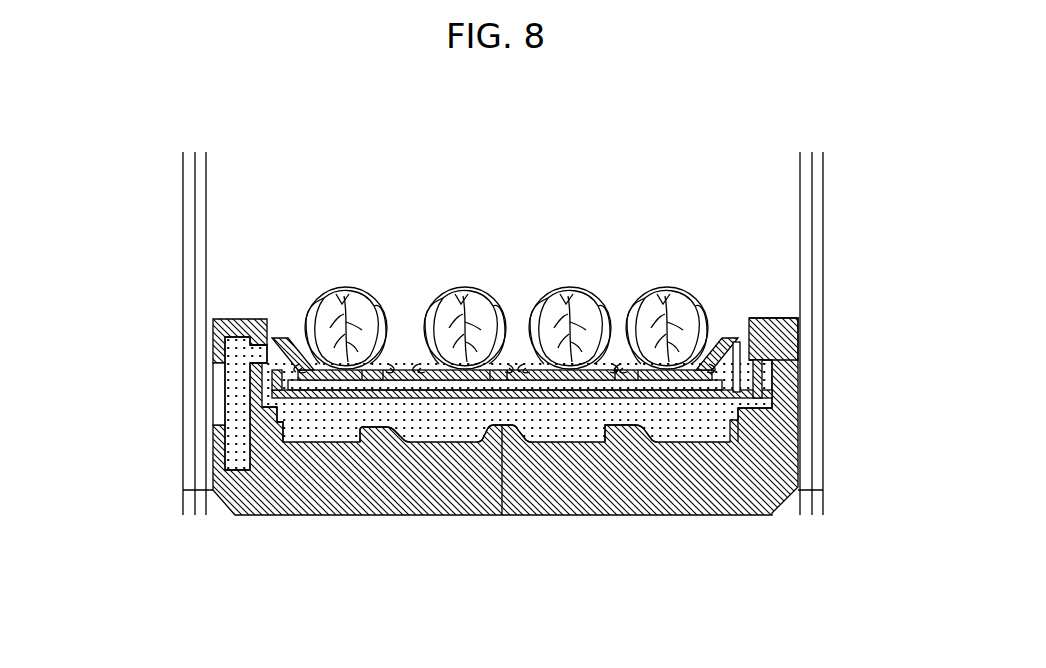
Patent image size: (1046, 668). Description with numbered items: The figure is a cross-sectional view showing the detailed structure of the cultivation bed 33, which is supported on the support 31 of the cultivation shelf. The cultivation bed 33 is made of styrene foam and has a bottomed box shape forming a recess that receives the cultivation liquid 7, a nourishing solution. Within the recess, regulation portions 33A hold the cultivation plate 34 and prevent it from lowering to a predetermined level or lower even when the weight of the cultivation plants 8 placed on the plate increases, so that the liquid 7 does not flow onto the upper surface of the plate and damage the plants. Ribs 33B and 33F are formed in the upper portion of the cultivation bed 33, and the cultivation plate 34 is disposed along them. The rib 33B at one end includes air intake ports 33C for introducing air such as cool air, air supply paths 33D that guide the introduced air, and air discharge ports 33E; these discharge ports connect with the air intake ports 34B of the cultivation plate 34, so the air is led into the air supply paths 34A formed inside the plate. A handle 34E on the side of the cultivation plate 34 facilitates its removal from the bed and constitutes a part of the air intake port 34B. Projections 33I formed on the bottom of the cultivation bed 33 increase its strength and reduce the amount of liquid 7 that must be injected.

The cultivation liquid 7 is at (580, 420).
The cultivation plants 8 is at (570, 310).
The support 31 is at (183, 182).
The cultivation bed 33 is at (262, 502).
The regulation portions 33A is at (272, 413).
The rib 33B is at (213, 326).
The air intake ports 33C is at (218, 402).
The air supply paths 33D is at (237, 460).
The air discharge ports 33E is at (262, 353).
The rib 33F is at (765, 335).
The projections 33I is at (495, 427).
The cultivation plate 34 is at (752, 361).
The air supply paths 34A is at (507, 396).
The air intake ports 34B is at (292, 378).
The handle 34E is at (288, 338).